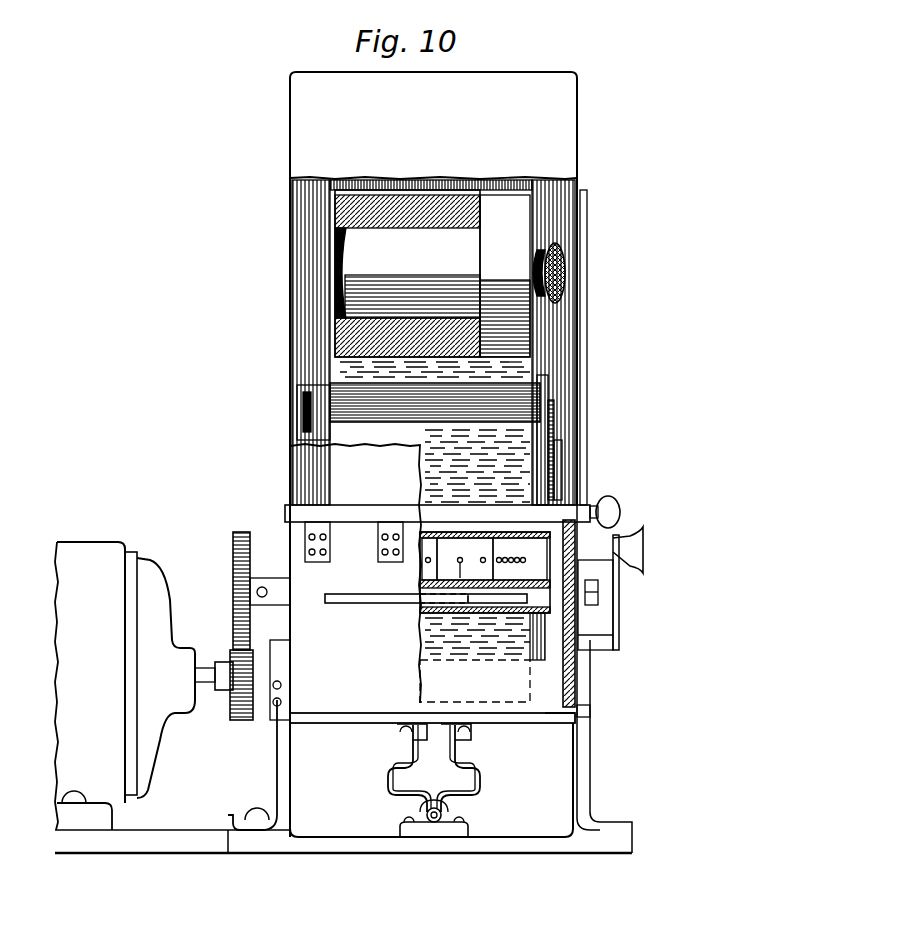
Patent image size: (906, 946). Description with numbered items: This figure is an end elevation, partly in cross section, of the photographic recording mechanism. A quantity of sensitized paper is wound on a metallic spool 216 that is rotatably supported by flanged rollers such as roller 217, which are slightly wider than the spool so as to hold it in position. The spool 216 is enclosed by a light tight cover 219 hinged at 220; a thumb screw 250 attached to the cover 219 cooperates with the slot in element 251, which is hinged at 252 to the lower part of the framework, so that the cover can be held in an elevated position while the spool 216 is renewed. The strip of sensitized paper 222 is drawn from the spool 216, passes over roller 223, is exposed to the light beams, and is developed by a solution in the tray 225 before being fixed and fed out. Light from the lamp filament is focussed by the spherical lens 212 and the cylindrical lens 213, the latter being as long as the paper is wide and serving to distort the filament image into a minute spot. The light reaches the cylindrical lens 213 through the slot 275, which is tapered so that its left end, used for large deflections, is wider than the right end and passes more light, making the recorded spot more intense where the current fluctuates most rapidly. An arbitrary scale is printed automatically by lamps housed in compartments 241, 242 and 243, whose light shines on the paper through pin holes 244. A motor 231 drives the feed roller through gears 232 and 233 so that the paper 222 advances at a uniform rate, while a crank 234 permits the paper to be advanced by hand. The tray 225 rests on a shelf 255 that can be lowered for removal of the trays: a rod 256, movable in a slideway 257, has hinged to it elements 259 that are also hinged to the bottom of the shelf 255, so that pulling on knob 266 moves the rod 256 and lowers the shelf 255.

The light tight cover 219 is at (566, 113).
The spherical lens 212 is at (520, 228).
The metallic spool 216 is at (370, 256).
The strip of sensitized paper 222 is at (340, 368).
The roller 217 is at (340, 398).
The roller 223 is at (572, 470).
The slotted element 251 is at (575, 465).
The thumb screw 250 is at (612, 512).
The hinge 220 is at (318, 522).
The compartment 241 is at (432, 545).
The compartment 242 is at (458, 550).
The compartment 243 is at (508, 545).
The pin holes 244 is at (440, 563).
The slot 275 is at (350, 596).
The cylindrical lens 213 is at (430, 597).
The motor 231 is at (115, 532).
The gear 233 is at (235, 556).
The gear 232 is at (245, 705).
The crank 234 is at (620, 582).
The hinge 252 is at (598, 594).
The shelf 255 is at (565, 715).
The tray 225 is at (545, 718).
The hinged elements 259 is at (390, 775).
The knob 266 is at (420, 812).
The rod 256 is at (428, 816).
The slideway 257 is at (445, 820).